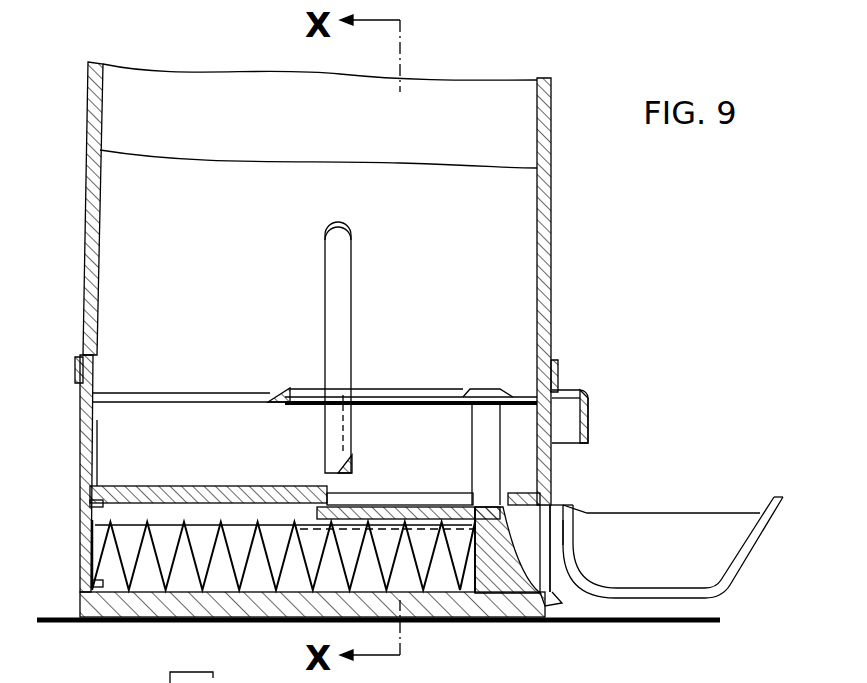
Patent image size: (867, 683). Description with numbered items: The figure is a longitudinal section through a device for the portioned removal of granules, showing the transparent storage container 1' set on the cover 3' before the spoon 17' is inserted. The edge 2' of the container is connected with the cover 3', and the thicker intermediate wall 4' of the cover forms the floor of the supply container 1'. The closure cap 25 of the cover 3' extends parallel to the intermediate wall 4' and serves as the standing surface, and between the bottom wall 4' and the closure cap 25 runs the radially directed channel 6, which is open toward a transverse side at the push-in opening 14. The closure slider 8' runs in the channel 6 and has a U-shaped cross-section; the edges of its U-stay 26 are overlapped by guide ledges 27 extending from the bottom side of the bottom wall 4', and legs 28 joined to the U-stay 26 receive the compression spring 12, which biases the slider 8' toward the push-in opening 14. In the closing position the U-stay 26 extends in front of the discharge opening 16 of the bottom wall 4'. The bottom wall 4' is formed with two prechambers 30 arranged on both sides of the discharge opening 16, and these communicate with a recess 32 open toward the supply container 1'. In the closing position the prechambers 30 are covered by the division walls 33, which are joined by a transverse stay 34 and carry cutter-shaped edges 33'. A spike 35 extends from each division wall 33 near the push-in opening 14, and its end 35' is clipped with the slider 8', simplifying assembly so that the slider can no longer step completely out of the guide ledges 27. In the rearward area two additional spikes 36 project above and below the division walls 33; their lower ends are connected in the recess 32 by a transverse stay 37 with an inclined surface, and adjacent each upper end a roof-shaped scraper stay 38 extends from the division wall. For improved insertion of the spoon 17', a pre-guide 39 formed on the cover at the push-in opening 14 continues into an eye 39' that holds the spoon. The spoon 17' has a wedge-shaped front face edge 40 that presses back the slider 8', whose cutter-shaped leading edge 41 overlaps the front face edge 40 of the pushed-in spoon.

The storage container 1' is at (608, 291).
The edge 2' is at (66, 350).
The cover 3' is at (187, 444).
The intermediate wall 4' is at (70, 473).
The channel 6 is at (142, 573).
The slider 8' is at (542, 588).
The compression spring 12 is at (137, 547).
The push-in opening 14 is at (552, 552).
The discharge opening 16 is at (440, 498).
The spoon 17' is at (673, 510).
The closure cap 25 is at (138, 603).
The U-stay 26 is at (440, 598).
The guide ledges 27 is at (270, 595).
The legs 28 is at (395, 577).
The prechambers 30 is at (418, 423).
The recess 32 is at (105, 442).
The division walls 33 is at (479, 313).
The cutter-shaped edges 33' is at (613, 342).
The transverse stay 34 is at (268, 390).
The spike 35 is at (572, 449).
The end of spike 35' is at (507, 588).
The additional spikes 36 is at (345, 355).
The transverse stay 37 is at (352, 462).
The scraper stay 38 is at (343, 373).
The pre-guide 39 is at (612, 542).
The eye 39' is at (613, 391).
The front face edge 40 is at (563, 503).
The cutter-shaped leading edge 41 is at (547, 556).